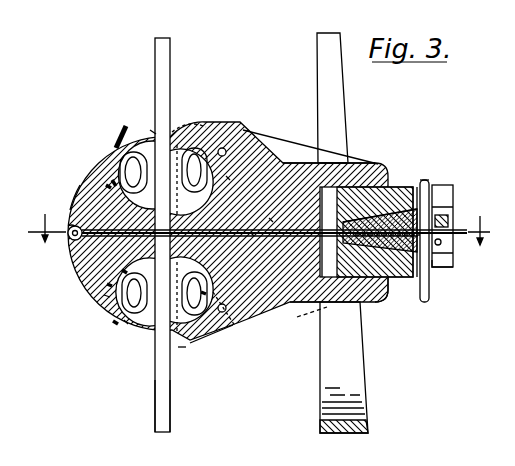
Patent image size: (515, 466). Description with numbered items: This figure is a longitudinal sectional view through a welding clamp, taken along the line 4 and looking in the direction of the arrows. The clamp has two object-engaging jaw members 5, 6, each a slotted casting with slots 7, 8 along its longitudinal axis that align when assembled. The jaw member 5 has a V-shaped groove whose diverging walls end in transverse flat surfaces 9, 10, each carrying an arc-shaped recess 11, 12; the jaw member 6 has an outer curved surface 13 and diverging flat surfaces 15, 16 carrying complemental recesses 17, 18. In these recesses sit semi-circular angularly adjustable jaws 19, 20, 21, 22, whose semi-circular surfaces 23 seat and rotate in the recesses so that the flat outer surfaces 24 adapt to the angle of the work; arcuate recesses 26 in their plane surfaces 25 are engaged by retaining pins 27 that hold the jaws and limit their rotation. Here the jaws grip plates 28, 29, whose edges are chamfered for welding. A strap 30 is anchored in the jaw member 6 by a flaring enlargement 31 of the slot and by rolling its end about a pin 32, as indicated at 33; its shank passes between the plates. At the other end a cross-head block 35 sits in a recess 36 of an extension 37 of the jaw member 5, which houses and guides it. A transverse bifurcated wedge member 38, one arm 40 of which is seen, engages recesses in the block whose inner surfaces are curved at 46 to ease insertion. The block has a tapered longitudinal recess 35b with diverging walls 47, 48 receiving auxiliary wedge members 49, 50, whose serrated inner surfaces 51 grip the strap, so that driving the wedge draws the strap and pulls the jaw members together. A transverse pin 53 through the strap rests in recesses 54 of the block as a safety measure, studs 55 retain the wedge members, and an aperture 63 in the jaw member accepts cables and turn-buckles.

The line 4— 4 is at (258, 229).
The jaw member 5 is at (229, 178).
The jaw member 6 is at (98, 170).
The slot 7 is at (271, 220).
The slot 8 is at (252, 234).
The transverse flat surface 9 is at (176, 131).
The transverse flat surface 10 is at (147, 326).
The recess 11 is at (192, 129).
The recess 12 is at (200, 341).
The outer curved surface 13 is at (78, 183).
The outwardly diverging flat surface 15 is at (121, 131).
The outwardly diverging flat surface 16 is at (127, 323).
The recess 17 is at (115, 185).
The recess 18 is at (126, 272).
The angularly adjustable jaw 19 is at (199, 143).
The angularly adjustable jaw 20 is at (182, 347).
The angularly adjustable jaw 21 is at (145, 143).
The angularly adjustable jaw 22 is at (117, 323).
The semi-circular surface 23 is at (110, 187).
The flat outer surface 24 is at (185, 262).
The plane surface 25 is at (153, 133).
The arcuate recess 26 is at (110, 297).
The retaining pin 27 is at (127, 137).
The plate 28 is at (171, 68).
The plate 29 is at (156, 413).
The strap 30 is at (290, 233).
The flaring enlargement 31 is at (71, 243).
The pin 32 is at (67, 238).
The rolled strap end 33 is at (68, 222).
The cross-head block 35 is at (378, 164).
The tapered longitudinal recess 35b is at (290, 306).
The recess 36 is at (363, 307).
The extension 37 is at (388, 294).
The bifurcated wedge member 38 is at (360, 432).
The arm 40 is at (360, 366).
The curved surface 46 is at (361, 193).
The diverging wall 47 is at (454, 190).
The diverging wall 48 is at (434, 272).
The auxiliary wedge member 49 is at (396, 217).
The auxiliary wedge member 50 is at (430, 299).
The serrated inner surface 51 is at (418, 228).
The transverse pin 53 is at (426, 187).
The recess 54 is at (443, 195).
The stud 55 is at (442, 243).
The aperture 63 is at (224, 149).